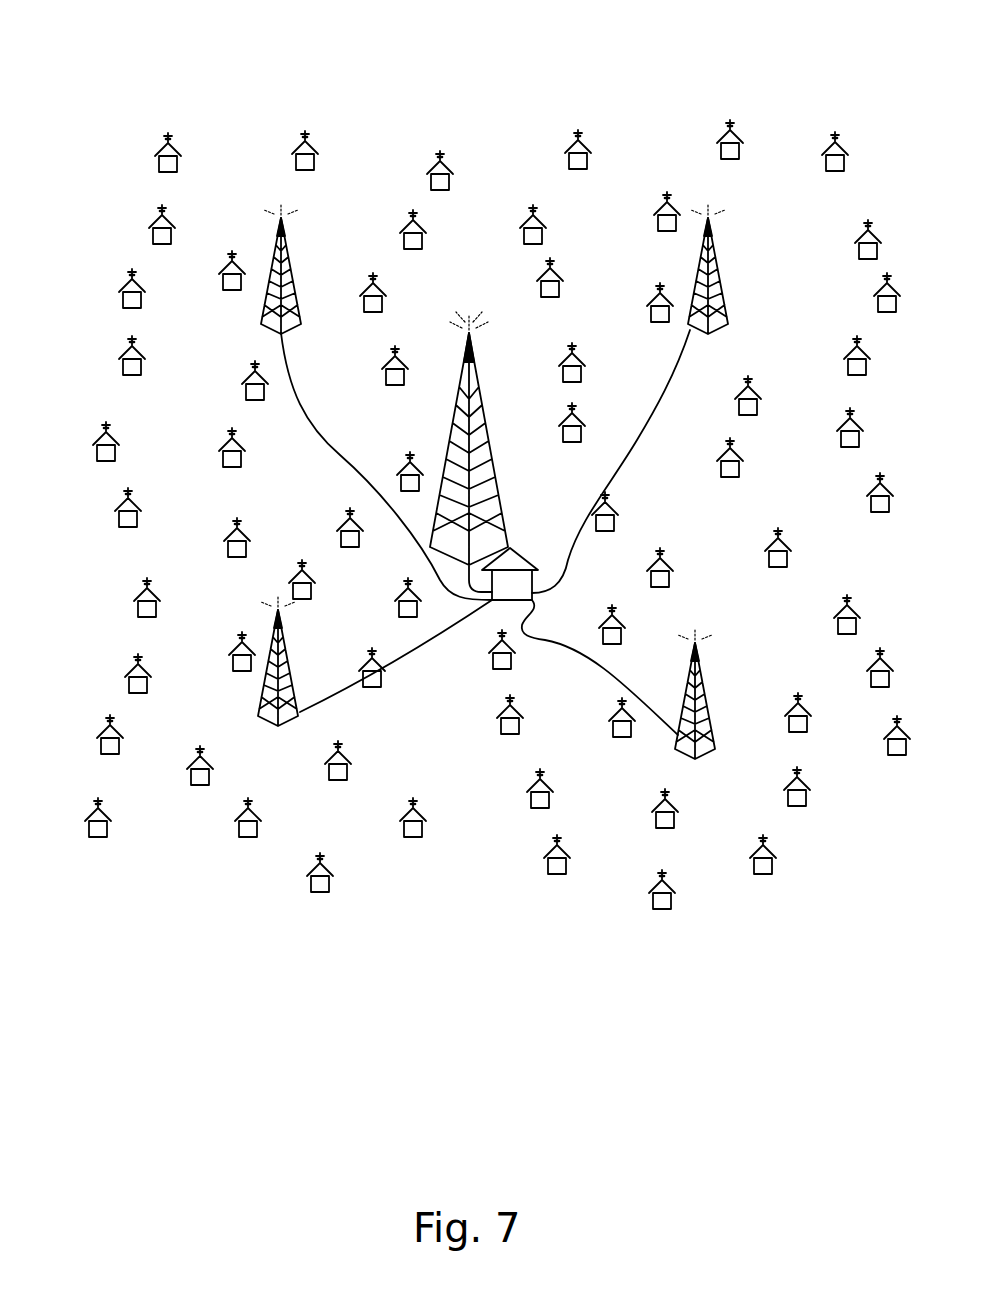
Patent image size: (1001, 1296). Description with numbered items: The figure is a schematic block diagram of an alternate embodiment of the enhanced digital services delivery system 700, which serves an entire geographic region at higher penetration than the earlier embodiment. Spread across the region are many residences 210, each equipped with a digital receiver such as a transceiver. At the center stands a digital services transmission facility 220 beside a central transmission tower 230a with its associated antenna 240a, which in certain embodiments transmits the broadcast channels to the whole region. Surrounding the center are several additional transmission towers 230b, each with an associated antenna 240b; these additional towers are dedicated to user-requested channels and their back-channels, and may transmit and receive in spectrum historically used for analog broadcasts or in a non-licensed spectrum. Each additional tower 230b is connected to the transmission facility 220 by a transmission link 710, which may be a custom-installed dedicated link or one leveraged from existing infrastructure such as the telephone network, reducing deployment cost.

The enhanced digital services delivery system 700 is at (89, 72).
The residence 210 is at (159, 164).
The digital services transmission facility 220 is at (522, 558).
The central transmission tower 230a is at (495, 478).
The additional transmission tower 230b is at (262, 322).
The antenna 240a is at (468, 340).
The antenna 240b is at (281, 222).
The transmission link 710 is at (330, 454).